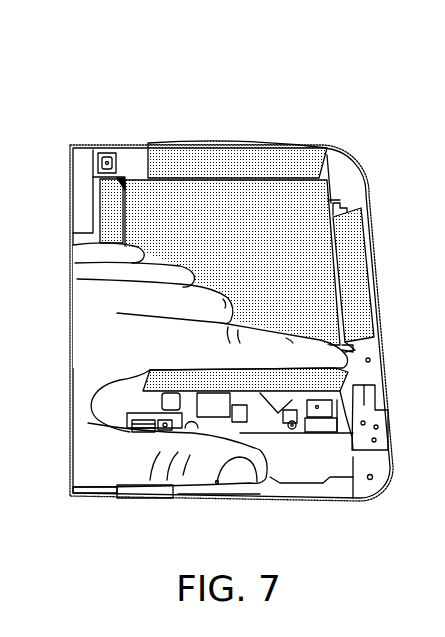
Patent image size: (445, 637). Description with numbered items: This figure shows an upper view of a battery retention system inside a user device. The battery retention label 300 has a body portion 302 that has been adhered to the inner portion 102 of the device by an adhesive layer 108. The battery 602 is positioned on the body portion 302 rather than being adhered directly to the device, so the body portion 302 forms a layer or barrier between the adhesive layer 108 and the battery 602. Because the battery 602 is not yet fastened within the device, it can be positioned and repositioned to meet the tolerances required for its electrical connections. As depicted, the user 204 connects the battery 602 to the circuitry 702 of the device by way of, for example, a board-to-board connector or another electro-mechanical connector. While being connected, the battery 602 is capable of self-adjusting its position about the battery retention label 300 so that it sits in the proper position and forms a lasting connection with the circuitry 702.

The inner portion 102 is at (337, 84).
The battery retention label 300 is at (252, 121).
The body portion 302 is at (332, 183).
The adhesive layer 108 is at (336, 199).
The user 204 is at (141, 250).
The battery 602 is at (257, 253).
The circuitry 702 is at (331, 334).